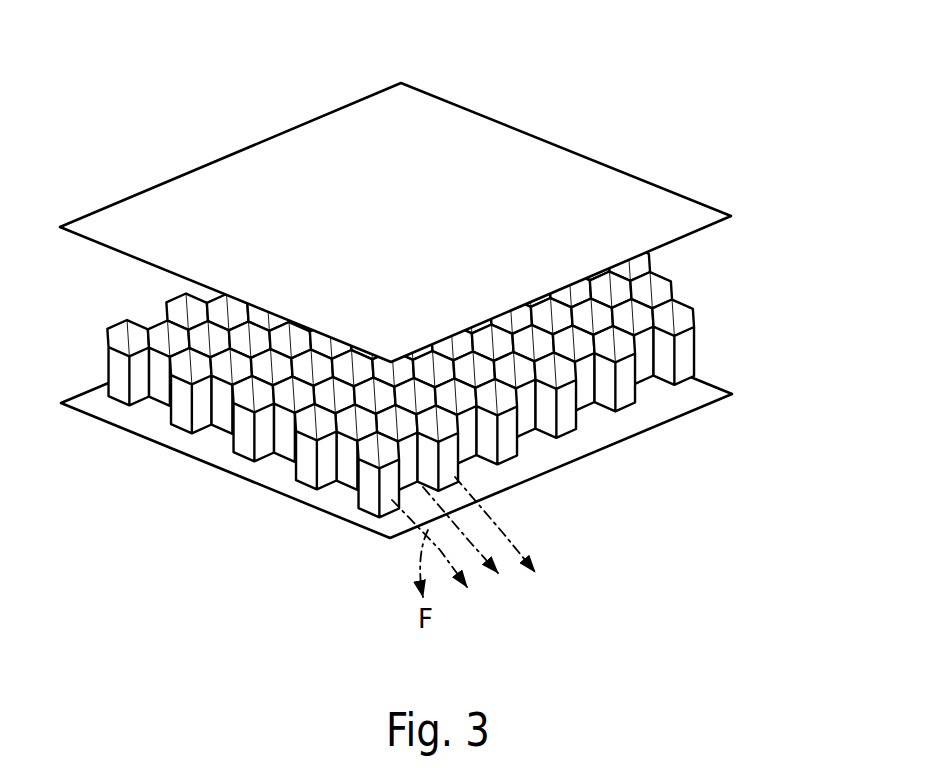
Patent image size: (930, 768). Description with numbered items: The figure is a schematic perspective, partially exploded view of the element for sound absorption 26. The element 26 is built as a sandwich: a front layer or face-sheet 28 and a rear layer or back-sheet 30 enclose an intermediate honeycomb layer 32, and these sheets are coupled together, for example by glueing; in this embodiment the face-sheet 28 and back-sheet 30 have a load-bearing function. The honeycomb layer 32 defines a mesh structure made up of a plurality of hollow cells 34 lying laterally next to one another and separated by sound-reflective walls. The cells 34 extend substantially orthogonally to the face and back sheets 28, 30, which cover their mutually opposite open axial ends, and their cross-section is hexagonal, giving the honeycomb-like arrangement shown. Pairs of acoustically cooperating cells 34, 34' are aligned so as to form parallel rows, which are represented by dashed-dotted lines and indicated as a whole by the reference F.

The element for sound absorption 26 is at (426, 296).
The front layer (face-sheet) 28 is at (628, 193).
The rear layer (back-sheet) 30 is at (699, 401).
The honeycomb layer 32 is at (450, 397).
The hollow cells 34 is at (298, 465).
The acoustically cooperating cells 34' is at (531, 422).